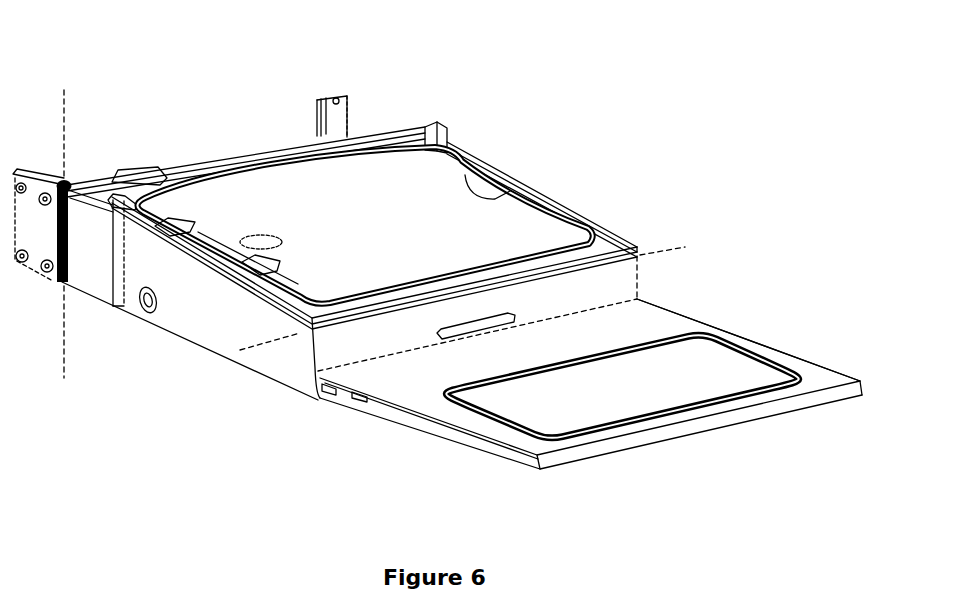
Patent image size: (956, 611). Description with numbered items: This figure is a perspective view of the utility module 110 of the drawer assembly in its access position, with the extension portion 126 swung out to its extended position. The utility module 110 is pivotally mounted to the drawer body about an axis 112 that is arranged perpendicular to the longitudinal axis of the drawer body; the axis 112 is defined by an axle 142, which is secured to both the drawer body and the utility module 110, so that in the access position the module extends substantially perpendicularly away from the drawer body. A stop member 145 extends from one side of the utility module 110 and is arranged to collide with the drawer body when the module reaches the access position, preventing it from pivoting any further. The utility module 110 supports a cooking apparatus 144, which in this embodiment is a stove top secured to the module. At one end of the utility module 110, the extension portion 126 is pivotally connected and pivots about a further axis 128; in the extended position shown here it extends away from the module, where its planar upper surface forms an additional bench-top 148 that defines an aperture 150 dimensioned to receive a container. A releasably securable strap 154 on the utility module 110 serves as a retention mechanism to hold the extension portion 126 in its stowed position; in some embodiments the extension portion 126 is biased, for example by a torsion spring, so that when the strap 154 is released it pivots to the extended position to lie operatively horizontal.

The utility module 110 is at (210, 318).
The axis 112 is at (63, 118).
The extension portion 126 is at (423, 417).
The further axis 128 is at (262, 346).
The axle 142 is at (65, 182).
The cooking apparatus 144 is at (498, 217).
The stop member 145 is at (337, 120).
The bench-top 148 is at (663, 322).
The aperture 150 is at (733, 373).
The strap 154 is at (427, 128).